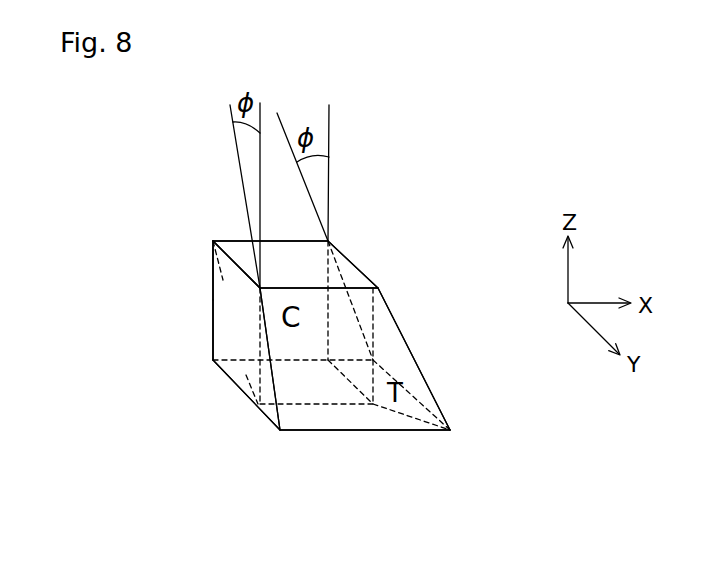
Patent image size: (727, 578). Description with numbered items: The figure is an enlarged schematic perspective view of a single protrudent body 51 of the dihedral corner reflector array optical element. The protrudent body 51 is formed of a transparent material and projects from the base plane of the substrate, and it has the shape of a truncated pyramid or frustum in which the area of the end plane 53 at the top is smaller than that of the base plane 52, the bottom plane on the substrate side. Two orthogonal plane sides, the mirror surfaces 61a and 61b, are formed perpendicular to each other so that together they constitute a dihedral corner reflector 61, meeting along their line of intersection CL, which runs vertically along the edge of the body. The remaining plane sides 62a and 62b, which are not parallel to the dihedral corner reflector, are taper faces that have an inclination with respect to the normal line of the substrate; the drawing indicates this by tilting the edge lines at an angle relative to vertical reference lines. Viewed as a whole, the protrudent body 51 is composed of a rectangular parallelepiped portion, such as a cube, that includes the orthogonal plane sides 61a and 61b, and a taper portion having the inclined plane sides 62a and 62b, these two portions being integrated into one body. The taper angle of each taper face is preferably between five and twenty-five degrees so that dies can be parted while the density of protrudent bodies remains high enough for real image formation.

The protrudent body 51 is at (405, 222).
The base plane 52 is at (245, 380).
The end plane 53 is at (238, 247).
The dihedral corner reflector 61 is at (88, 221).
The mirror surface 61a is at (228, 296).
The mirror surface 61b is at (214, 257).
The plane side 62a is at (397, 337).
The plane side 62b is at (368, 423).
The line of intersection CL is at (213, 312).